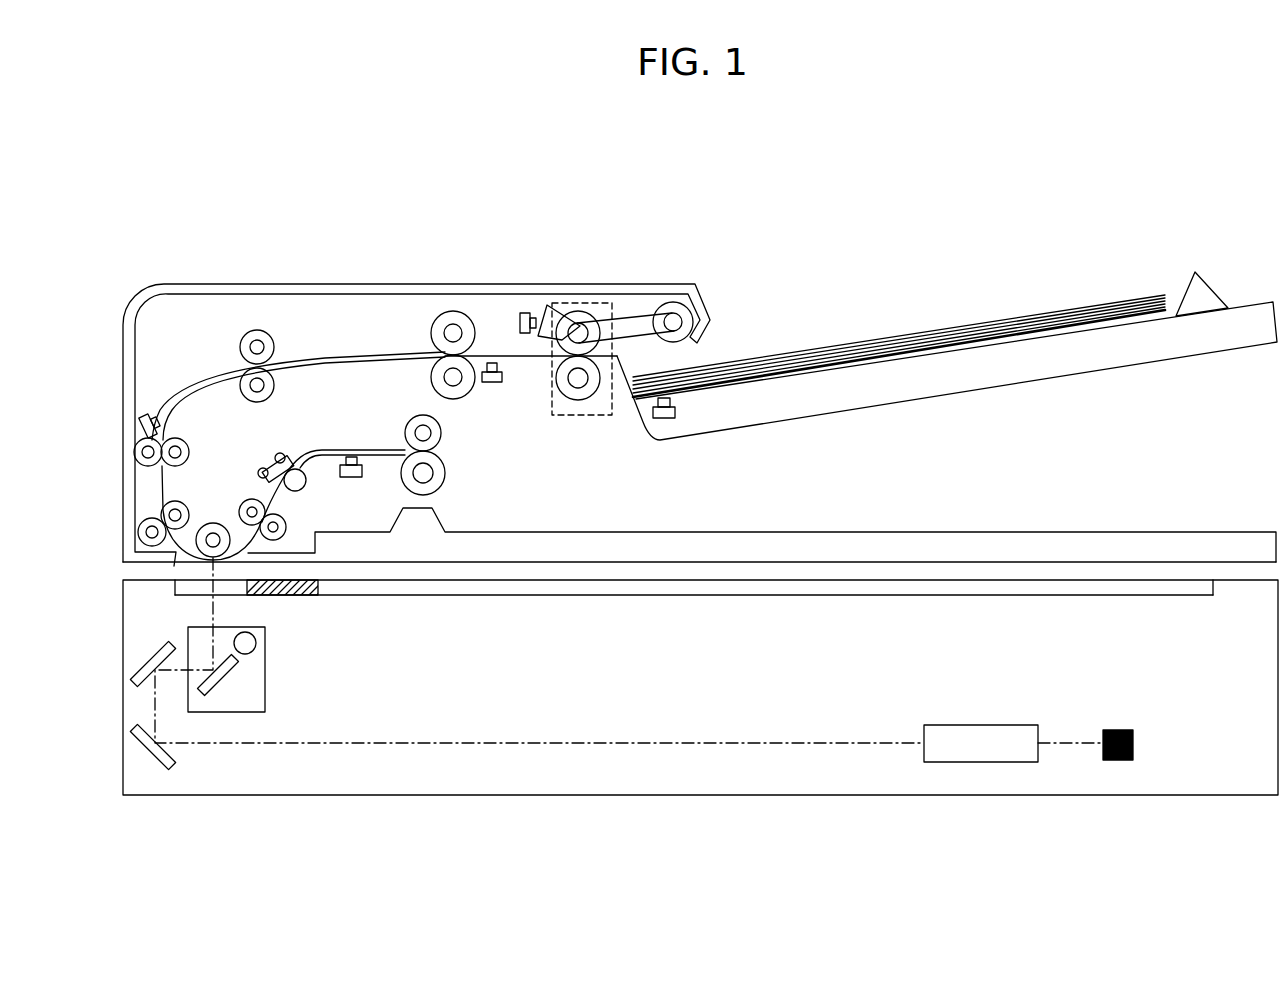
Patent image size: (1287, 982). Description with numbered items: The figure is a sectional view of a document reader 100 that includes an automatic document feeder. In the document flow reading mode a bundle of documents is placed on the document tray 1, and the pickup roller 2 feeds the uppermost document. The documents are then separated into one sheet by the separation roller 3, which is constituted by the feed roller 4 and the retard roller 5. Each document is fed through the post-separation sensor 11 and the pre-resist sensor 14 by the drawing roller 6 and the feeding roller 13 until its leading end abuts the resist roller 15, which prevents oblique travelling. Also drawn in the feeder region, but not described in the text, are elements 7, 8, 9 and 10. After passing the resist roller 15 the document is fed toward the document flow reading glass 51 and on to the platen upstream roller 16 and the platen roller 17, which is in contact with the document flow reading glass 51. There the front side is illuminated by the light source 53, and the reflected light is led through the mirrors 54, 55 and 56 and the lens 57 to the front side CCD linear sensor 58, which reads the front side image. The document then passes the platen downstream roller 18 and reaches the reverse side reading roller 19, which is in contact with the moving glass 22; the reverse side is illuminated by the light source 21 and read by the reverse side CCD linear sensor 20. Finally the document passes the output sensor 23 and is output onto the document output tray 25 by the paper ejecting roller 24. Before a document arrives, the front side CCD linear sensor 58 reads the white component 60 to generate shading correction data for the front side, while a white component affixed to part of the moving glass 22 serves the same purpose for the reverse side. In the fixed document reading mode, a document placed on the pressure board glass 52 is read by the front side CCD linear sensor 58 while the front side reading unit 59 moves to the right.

The document reader 100 is at (404, 160).
The document tray 1 is at (890, 402).
The pickup roller 2 is at (685, 303).
The separation roller 3 is at (575, 416).
The feed roller 4 is at (590, 312).
The retard roller 5 is at (578, 402).
The drawing roller 6 is at (450, 311).
The document detection sensor 7 is at (676, 412).
The document stopper 8 is at (1197, 273).
The pickup arm 9 is at (549, 305).
The document sensor 10 is at (521, 313).
The post-separation sensor 11 is at (491, 383).
The feeding roller 13 is at (270, 331).
The pre-resist sensor 14 is at (144, 424).
The resist roller 15 is at (178, 438).
The platen upstream roller 16 is at (140, 538).
The platen roller 17 is at (213, 522).
The platen downstream roller 18 is at (287, 527).
The reverse side reading roller 19 is at (306, 484).
The reverse side CCD linear sensor 20 is at (263, 462).
The light source 21 is at (281, 452).
The moving glass 22 is at (296, 454).
The output sensor 23 is at (352, 478).
The paper ejecting roller 24 is at (446, 470).
The document output tray 25 is at (652, 532).
The document flow reading glass 51 is at (172, 591).
The pressure board glass 52 is at (478, 597).
The light source 53 is at (258, 644).
The mirror 54 is at (214, 690).
The mirror 55 is at (166, 648).
The mirror 56 is at (177, 762).
The lens 57 is at (975, 725).
The front side CCD linear sensor 58 is at (1118, 730).
The front side reading unit 59 is at (266, 694).
The white component 60 is at (300, 597).